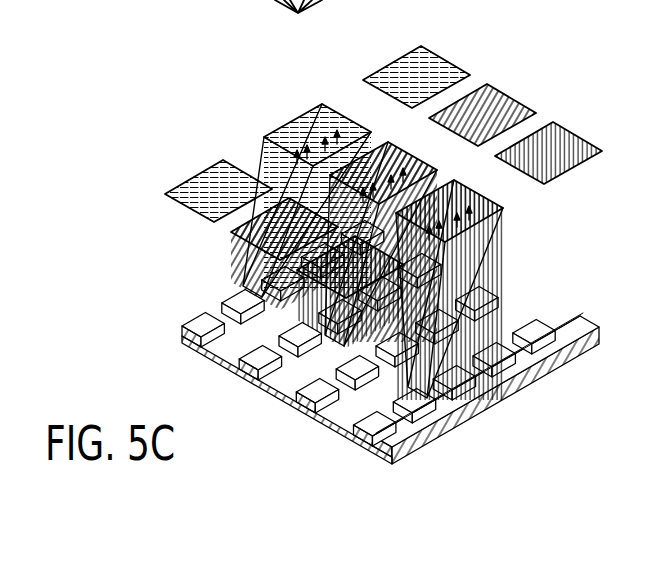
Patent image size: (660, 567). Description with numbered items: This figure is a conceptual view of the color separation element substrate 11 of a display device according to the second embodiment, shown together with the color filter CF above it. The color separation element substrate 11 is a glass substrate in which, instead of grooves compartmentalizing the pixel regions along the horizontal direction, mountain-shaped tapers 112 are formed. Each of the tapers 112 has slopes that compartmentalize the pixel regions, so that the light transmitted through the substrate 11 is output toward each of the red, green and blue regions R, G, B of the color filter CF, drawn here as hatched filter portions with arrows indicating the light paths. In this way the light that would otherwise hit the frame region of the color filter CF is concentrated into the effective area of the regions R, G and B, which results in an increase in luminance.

The color separation element substrate 11 is at (226, 368).
The mountain-shaped tapers 112 is at (423, 404).
The blue region B is at (438, 58).
The green region G is at (502, 97).
The red region R is at (449, 189).
The color filter CF is at (386, 149).